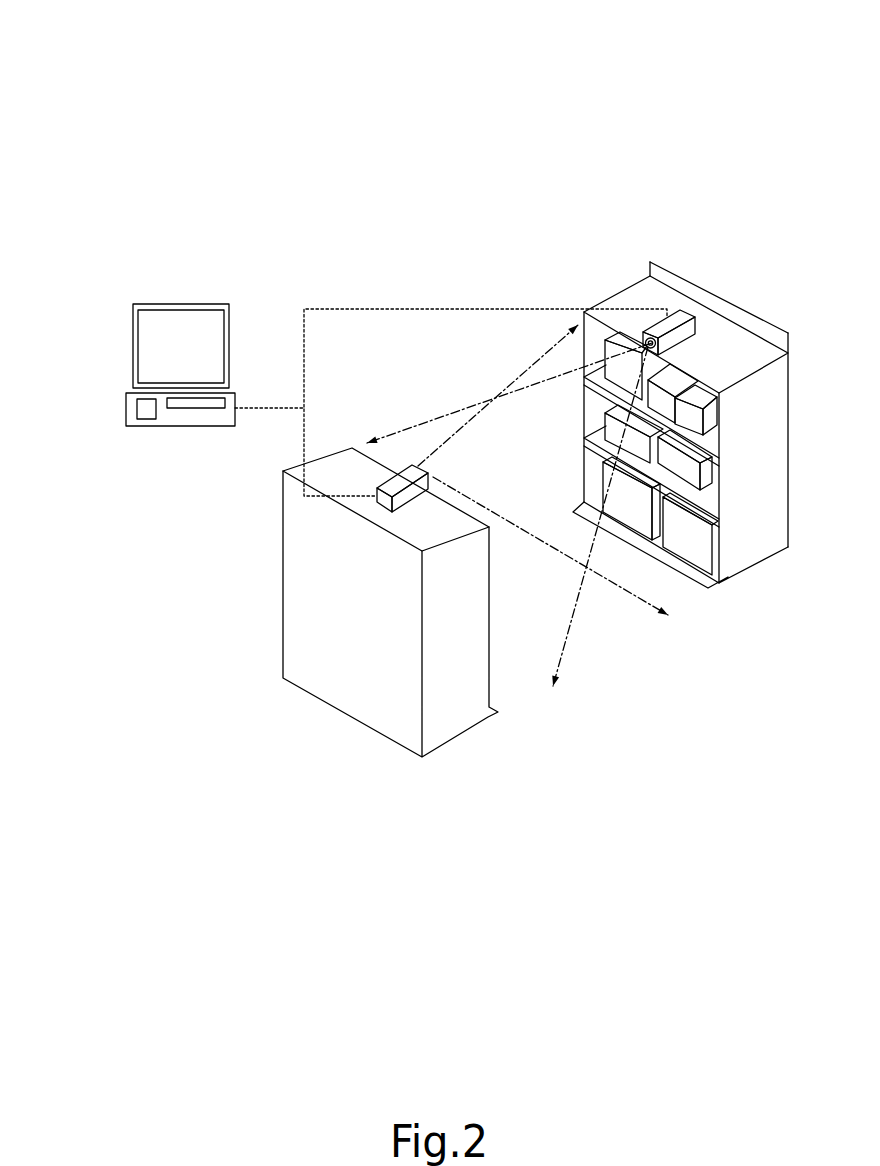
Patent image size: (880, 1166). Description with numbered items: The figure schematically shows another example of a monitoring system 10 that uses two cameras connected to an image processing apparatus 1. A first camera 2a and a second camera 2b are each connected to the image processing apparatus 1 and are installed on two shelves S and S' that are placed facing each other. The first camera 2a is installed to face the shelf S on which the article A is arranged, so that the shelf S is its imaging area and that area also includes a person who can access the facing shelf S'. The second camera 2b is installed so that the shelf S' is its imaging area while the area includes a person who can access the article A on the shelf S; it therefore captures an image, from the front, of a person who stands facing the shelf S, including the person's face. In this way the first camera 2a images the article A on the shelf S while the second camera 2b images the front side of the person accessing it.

The monitoring system 10 is at (316, 216).
The image processing apparatus 1 is at (127, 408).
The first camera 2a is at (429, 468).
The second camera 2b is at (687, 320).
The article A is at (604, 421).
The shelf S is at (690, 425).
The shelf S' is at (371, 602).